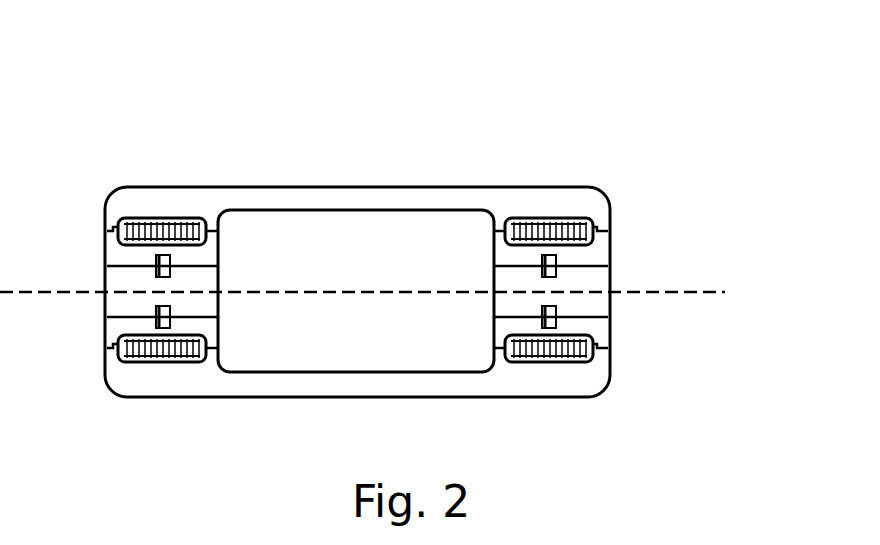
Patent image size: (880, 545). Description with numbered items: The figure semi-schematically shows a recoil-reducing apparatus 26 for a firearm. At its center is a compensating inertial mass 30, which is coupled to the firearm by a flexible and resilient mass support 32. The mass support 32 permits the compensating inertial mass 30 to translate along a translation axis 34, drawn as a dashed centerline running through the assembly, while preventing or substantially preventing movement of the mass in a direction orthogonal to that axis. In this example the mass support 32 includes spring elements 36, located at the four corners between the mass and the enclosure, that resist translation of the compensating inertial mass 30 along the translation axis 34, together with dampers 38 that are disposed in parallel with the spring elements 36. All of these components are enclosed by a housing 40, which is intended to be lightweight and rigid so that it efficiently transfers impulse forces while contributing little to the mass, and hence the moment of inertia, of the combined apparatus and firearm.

The recoil-reducing apparatus 26 is at (262, 78).
The compensating inertial mass 30 is at (302, 210).
The mass support 32 is at (323, 293).
The translation axis 34 is at (665, 291).
The spring elements 36 is at (147, 216).
The dampers 38 is at (156, 262).
The housing 40 is at (389, 187).